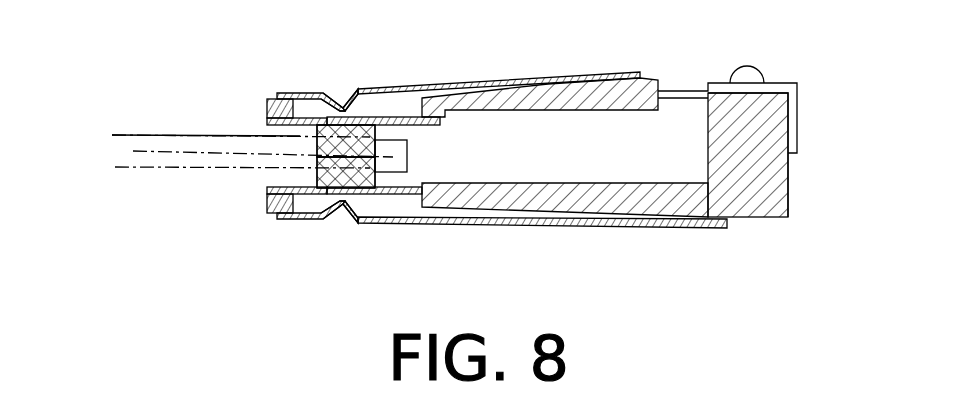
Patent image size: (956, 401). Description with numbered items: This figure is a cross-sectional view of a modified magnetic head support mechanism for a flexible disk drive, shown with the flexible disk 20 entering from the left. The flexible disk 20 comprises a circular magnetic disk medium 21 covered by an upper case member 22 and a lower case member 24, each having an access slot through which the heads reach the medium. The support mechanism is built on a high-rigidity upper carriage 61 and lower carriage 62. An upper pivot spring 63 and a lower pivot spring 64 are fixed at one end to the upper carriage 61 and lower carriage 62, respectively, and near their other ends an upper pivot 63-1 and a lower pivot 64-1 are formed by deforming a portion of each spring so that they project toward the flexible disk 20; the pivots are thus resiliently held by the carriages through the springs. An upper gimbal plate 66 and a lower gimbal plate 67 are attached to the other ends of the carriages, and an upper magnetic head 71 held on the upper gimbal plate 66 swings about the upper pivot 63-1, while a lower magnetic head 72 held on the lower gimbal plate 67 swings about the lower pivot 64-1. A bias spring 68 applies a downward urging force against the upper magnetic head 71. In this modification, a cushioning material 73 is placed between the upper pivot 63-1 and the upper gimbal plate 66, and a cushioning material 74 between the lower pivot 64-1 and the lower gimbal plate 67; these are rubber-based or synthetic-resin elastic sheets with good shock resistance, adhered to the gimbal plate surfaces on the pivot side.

The flexible disk 20 is at (137, 124).
The magnetic disk medium 21 is at (148, 148).
The upper case member 22 is at (165, 134).
The lower case member 24 is at (150, 170).
The upper carriage 61 is at (650, 82).
The lower carriage 62 is at (755, 192).
The upper pivot spring 63 is at (452, 84).
The upper pivot 63-1 is at (347, 98).
The lower pivot spring 64 is at (366, 224).
The lower pivot 64-1 is at (338, 208).
The upper gimbal plate 66 is at (428, 127).
The lower gimbal plate 67 is at (426, 186).
The bias spring 68 is at (688, 89).
The upper magnetic head 71 is at (317, 134).
The lower magnetic head 72 is at (317, 177).
The cushioning material 73 is at (367, 87).
The cushioning material 74 is at (378, 218).